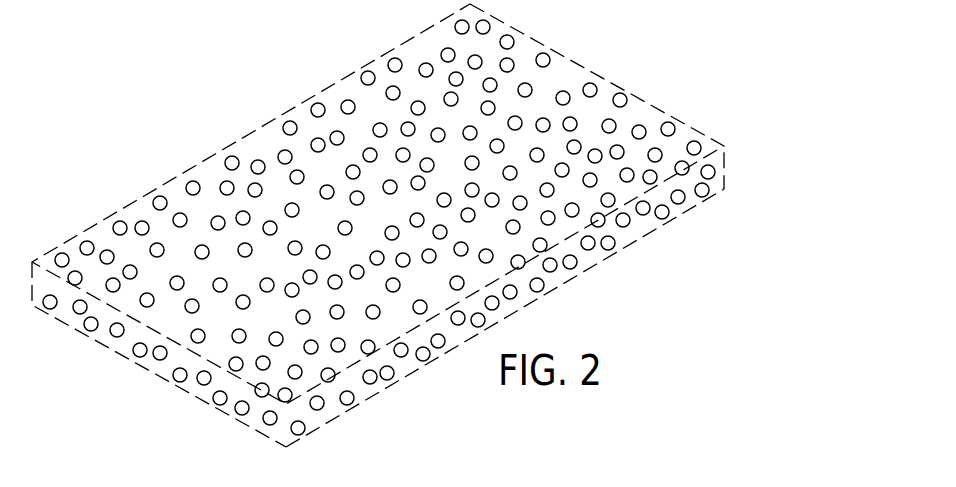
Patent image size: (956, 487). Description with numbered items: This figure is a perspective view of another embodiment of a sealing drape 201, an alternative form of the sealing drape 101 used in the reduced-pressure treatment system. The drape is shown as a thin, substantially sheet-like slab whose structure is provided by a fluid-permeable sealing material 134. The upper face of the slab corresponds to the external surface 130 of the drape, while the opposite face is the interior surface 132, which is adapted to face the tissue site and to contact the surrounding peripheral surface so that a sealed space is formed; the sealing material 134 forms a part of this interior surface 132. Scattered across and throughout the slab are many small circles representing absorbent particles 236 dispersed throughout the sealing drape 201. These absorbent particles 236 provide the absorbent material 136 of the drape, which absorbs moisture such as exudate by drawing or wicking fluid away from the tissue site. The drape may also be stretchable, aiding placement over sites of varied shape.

The sealing drape 101 is at (378, 225).
The sealing drape 201 is at (378, 225).
The external surface 130 is at (578, 77).
The interior surface 132 is at (387, 388).
The sealing material 134 is at (633, 233).
The absorbent material 136 is at (376, 227).
The absorbent particles 236 is at (118, 220).